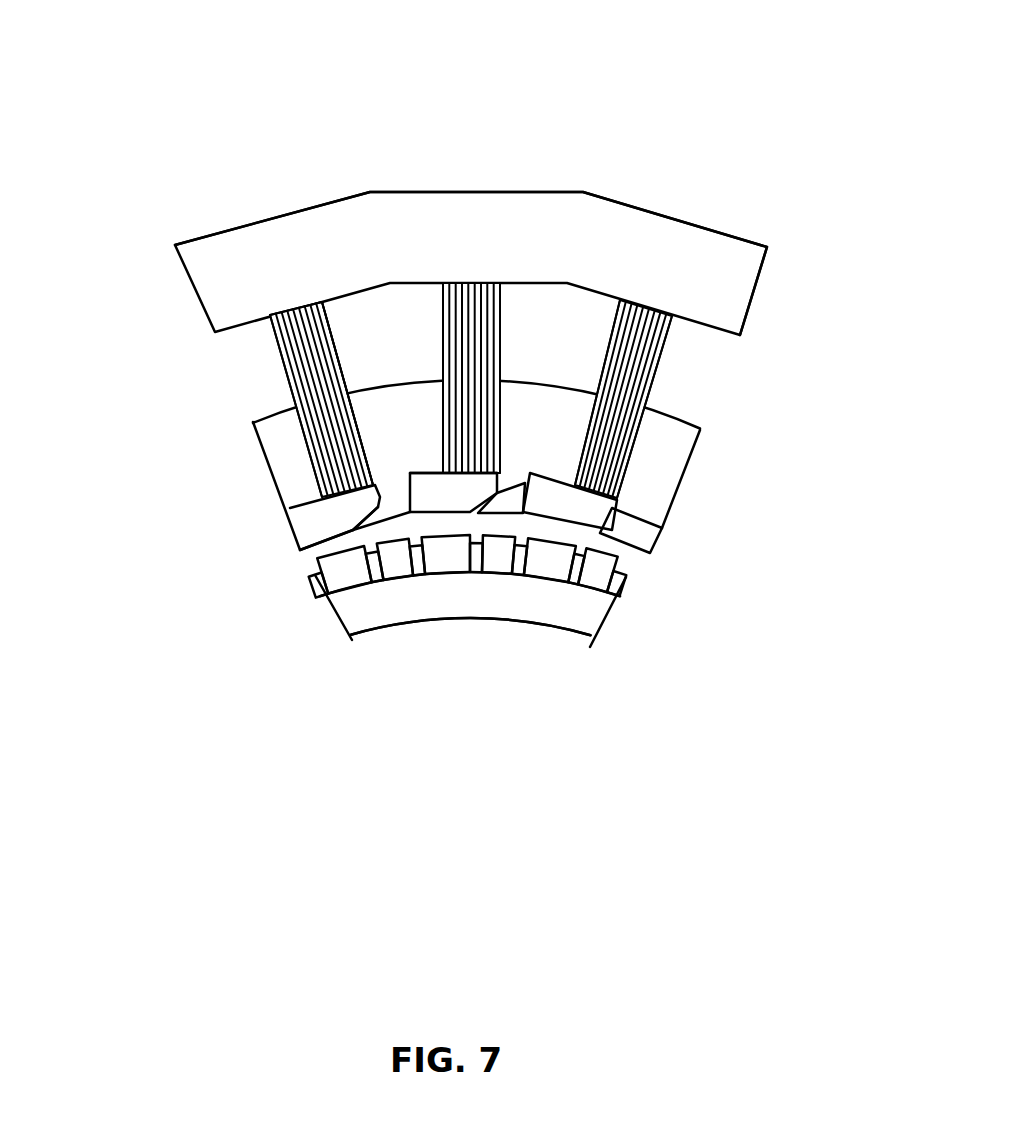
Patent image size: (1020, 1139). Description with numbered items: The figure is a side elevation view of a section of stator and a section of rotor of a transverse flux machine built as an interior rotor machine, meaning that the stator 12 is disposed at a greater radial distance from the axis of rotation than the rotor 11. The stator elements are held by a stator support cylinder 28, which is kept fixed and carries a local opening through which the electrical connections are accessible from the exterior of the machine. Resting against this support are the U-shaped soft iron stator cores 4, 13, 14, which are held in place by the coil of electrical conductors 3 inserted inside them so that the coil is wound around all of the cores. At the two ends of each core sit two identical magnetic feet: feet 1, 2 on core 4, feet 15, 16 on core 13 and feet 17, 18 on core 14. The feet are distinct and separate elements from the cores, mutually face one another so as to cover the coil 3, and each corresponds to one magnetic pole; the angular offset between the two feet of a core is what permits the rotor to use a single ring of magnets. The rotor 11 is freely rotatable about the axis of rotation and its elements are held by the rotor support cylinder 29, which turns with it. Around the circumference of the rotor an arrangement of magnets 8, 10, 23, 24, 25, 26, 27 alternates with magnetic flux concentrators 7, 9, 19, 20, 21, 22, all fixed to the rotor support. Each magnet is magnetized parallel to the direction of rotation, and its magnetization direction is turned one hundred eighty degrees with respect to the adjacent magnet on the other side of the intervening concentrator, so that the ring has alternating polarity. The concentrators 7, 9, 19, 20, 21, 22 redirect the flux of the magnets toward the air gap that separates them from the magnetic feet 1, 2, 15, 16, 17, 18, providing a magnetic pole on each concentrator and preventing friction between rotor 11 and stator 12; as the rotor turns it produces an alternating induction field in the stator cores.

The magnetic foot 1 is at (643, 543).
The magnetic foot 2 is at (662, 528).
The coil of electrical conductors 3 is at (660, 465).
The U-shaped soft iron stator core 4 is at (650, 366).
The magnetic flux concentrator 7 is at (620, 598).
The magnet 8 is at (583, 585).
The magnetic flux concentrator 9 is at (550, 567).
The magnet 10 is at (627, 592).
The rotor 11 is at (562, 657).
The stator 12 is at (657, 197).
The U-shaped soft iron stator core 13 is at (320, 300).
The U-shaped soft iron stator core 14 is at (415, 490).
The magnetic foot 15 is at (318, 518).
The magnetic foot 16 is at (395, 497).
The magnetic foot 17 is at (427, 485).
The magnetic foot 18 is at (510, 493).
The magnetic flux concentrator 19 is at (495, 565).
The magnetic flux concentrator 20 is at (455, 565).
The magnetic flux concentrator 21 is at (407, 565).
The magnetic flux concentrator 22 is at (350, 572).
The magnet 23 is at (520, 555).
The magnet 24 is at (476, 565).
The magnet 25 is at (428, 565).
The magnet 26 is at (375, 517).
The magnet 27 is at (330, 588).
The stator support cylinder 28 is at (735, 283).
The rotor support cylinder 29 is at (357, 623).